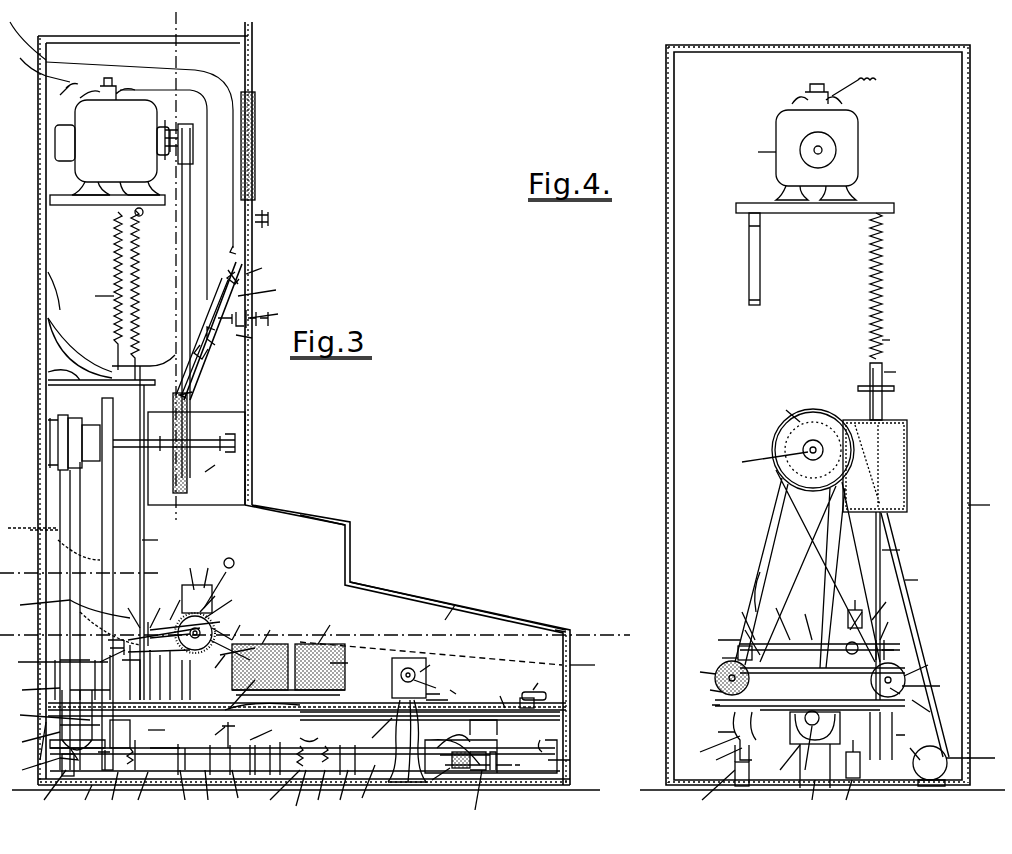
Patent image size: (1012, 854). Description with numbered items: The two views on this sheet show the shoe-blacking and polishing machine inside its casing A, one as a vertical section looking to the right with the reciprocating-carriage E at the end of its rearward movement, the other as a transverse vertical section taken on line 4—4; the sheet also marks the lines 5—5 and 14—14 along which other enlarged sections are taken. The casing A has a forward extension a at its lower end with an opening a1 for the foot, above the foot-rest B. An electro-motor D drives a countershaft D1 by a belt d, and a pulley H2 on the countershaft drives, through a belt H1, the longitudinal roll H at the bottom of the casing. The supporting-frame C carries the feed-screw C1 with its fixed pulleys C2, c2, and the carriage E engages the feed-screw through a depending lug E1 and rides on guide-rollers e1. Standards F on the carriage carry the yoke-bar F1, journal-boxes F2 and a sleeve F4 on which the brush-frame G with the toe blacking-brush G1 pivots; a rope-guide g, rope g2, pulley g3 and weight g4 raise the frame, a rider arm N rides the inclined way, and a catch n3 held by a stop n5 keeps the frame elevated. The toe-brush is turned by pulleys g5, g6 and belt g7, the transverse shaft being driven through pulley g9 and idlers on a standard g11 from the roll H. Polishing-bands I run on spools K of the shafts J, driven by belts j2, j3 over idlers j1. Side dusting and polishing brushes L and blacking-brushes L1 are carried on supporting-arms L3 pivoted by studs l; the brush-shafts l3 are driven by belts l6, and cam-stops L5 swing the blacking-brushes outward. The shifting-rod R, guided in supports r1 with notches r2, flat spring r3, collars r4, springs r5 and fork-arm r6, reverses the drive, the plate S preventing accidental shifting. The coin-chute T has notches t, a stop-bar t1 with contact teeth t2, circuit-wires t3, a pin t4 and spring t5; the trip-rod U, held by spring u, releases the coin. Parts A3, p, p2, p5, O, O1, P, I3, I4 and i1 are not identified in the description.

In FIG. 3, the casing A is at (322, 511).
In FIG. 4, the casing A is at (829, 415).
In FIG. 3, the cabinet casing A3 is at (304, 403).
In FIG. 3, the section line 4— 4 is at (175, 264).
In FIG. 3, the section line 14— 14 is at (315, 611).
In FIG. 3, the section line 5— 5 is at (589, 666).
In FIG. 3, the electro-motor D is at (110, 141).
In FIG. 4, the electro-motor D is at (815, 148).
In FIG. 3, the countershaft D1 is at (196, 449).
In FIG. 4, the countershaft D1 is at (819, 466).
In FIG. 3, the belt d is at (182, 301).
In FIG. 3, the notches t is at (260, 315).
In FIG. 4, the stop-bar t1 is at (884, 391).
In FIG. 3, the contact teeth t2 is at (245, 305).
In FIG. 3, the electric circuit-wires t3 is at (123, 161).
In FIG. 4, the electric circuit-wires t3 is at (854, 93).
In FIG. 3, the spring controlled pin t4 is at (255, 315).
In FIG. 3, the spiral-spring t5 is at (107, 291).
In FIG. 3, the coin-chute T is at (209, 331).
In FIG. 3, the spiral-spring u is at (144, 294).
In FIG. 4, the spiral-spring u is at (886, 286).
In FIG. 3, the trip-rod U is at (155, 542).
In FIG. 4, the trip-rod U is at (895, 606).
In FIG. 3, the longitudinal roll H is at (318, 794).
In FIG. 4, the longitudinal roll H is at (959, 766).
In FIG. 3, the belt H1 is at (97, 584).
In FIG. 4, the belt H1 is at (915, 635).
In FIG. 3, the pulley H2 is at (91, 435).
In FIG. 4, the pulley H2 is at (810, 442).
In FIG. 3, the forward extension a is at (559, 615).
In FIG. 3, the opening a1 is at (287, 574).
In FIG. 3, the brush-frame G is at (209, 633).
In FIG. 4, the brush-frame G is at (860, 635).
In FIG. 3, the toe blacking-brush G1 is at (242, 644).
In FIG. 3, the curved rope-guide g is at (184, 619).
In FIG. 3, the rope or wire g2 is at (110, 617).
In FIG. 4, the rope or wire g2 is at (857, 749).
In FIG. 3, the pulley g3 is at (67, 607).
In FIG. 4, the pulley g3 is at (866, 613).
In FIG. 3, the weight g4 is at (38, 766).
In FIG. 4, the weight g4 is at (848, 798).
In FIG. 3, the pulley g5 is at (225, 604).
In FIG. 3, the pulley g6 is at (154, 610).
In FIG. 4, the pulley g6 is at (745, 635).
In FIG. 3, the belt g7 is at (178, 597).
In FIG. 4, the belt g7 is at (742, 618).
In FIG. 4, the pulley g9 is at (890, 634).
In FIG. 3, the standard g11 is at (225, 670).
In FIG. 3, the pin p is at (210, 570).
In FIG. 3, the lever p2 is at (128, 610).
In FIG. 3, the block p5 is at (240, 685).
In FIG. 3, the pivot O is at (225, 580).
In FIG. 3, the box O1 is at (423, 674).
In FIG. 3, the disk P is at (424, 681).
In FIG. 3, the foot-rest B is at (448, 687).
In FIG. 3, the rider arm N is at (243, 626).
In FIG. 3, the vertical side dusting and polishing brushes L is at (296, 674).
In FIG. 3, the vertical side blacking-brushes L1 is at (288, 654).
In FIG. 3, the brush supporting-arm L3 is at (316, 732).
In FIG. 3, the cam-stops L5 is at (534, 688).
In FIG. 3, the pivot-bolts or studs l is at (538, 741).
In FIG. 4, the pivot-bolts or studs l is at (916, 759).
In FIG. 3, the brush-shaft l3 is at (329, 626).
In FIG. 3, the belts l6 is at (228, 735).
In FIG. 3, the standards or posts F is at (54, 663).
In FIG. 4, the standards or posts F is at (807, 639).
In FIG. 3, the yoke-bar F1 is at (104, 675).
In FIG. 4, the yoke-bar F1 is at (780, 616).
In FIG. 4, the journal-box F2 is at (728, 655).
In FIG. 4, the sleeve F4 is at (879, 622).
In FIG. 3, the supporting-frame C is at (430, 700).
In FIG. 4, the supporting-frame C is at (810, 736).
In FIG. 3, the feed-screw C1 is at (395, 741).
In FIG. 4, the feed-screw C1 is at (807, 743).
In FIG. 4, the pulleys C2 is at (804, 744).
In FIG. 3, the pulleys c2 is at (54, 728).
In FIG. 3, the reciprocating-carriage E is at (242, 749).
In FIG. 4, the reciprocating-carriage E is at (801, 690).
In FIG. 3, the depending lug E1 is at (119, 745).
In FIG. 4, the depending lug E1 is at (721, 755).
In FIG. 3, the guide-rollers e1 is at (272, 730).
In FIG. 4, the guide-rollers e1 is at (708, 689).
In FIG. 3, the polishing-bands I is at (139, 745).
In FIG. 4, the polishing-bands I is at (925, 685).
In FIG. 3, the casing I3 is at (491, 746).
In FIG. 3, the lever I4 is at (341, 794).
In FIG. 3, the ratchet i1 is at (461, 754).
In FIG. 4, the longitudinal shaft J is at (808, 673).
In FIG. 3, the idlers j1 is at (208, 794).
In FIG. 3, the belt j2 is at (184, 794).
In FIG. 4, the second belt j3 is at (926, 707).
In FIG. 4, the spools K is at (903, 691).
In FIG. 3, the shifting-rod R is at (300, 760).
In FIG. 4, the shifting-rod R is at (723, 780).
In FIG. 3, the supports r1 is at (324, 785).
In FIG. 3, the notches r2 is at (476, 798).
In FIG. 3, the flat spring r3 is at (141, 795).
In FIG. 3, the collars r4 is at (112, 795).
In FIG. 3, the spiral springs r5 is at (298, 797).
In FIG. 4, the spiral springs r5 is at (804, 619).
In FIG. 3, the fork-arm r6 is at (145, 734).
In FIG. 4, the fork-arm r6 is at (710, 746).
In FIG. 3, the vertical plate S is at (33, 750).
In FIG. 4, the vertical plate S is at (818, 780).
In FIG. 4, the catch n3 is at (760, 584).
In FIG. 3, the stop n5 is at (46, 713).